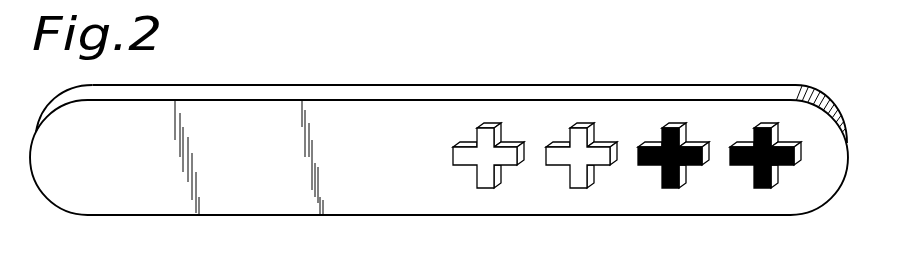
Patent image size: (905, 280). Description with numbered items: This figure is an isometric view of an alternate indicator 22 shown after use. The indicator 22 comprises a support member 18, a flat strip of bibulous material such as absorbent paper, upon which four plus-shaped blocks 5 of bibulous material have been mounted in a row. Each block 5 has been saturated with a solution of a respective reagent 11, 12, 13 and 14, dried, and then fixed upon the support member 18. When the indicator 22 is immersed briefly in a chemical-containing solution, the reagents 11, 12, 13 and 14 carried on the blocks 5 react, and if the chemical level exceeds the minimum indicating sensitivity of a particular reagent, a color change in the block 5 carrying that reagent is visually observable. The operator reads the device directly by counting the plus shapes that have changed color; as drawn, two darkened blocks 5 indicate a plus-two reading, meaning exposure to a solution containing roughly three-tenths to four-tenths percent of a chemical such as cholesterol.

The indicator 22 is at (514, 67).
The support member 18 is at (300, 93).
The reagent 14 is at (497, 188).
The reagent 13 is at (590, 188).
The reagent 12 is at (683, 188).
The reagent 11 is at (770, 188).
The plus-shaped block 5 is at (747, 138).